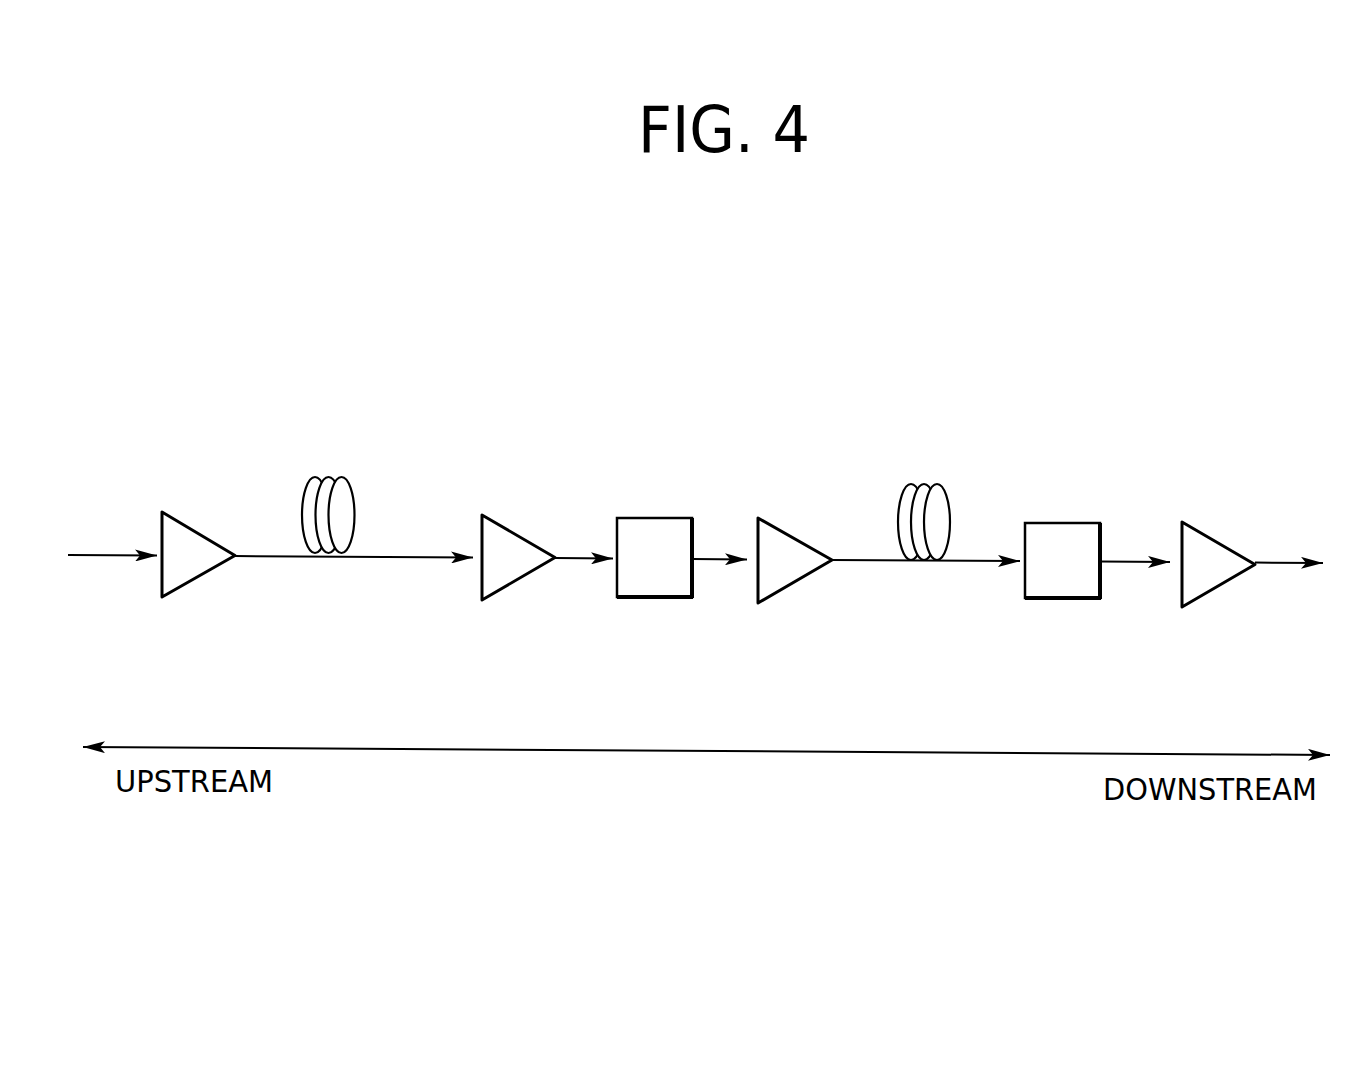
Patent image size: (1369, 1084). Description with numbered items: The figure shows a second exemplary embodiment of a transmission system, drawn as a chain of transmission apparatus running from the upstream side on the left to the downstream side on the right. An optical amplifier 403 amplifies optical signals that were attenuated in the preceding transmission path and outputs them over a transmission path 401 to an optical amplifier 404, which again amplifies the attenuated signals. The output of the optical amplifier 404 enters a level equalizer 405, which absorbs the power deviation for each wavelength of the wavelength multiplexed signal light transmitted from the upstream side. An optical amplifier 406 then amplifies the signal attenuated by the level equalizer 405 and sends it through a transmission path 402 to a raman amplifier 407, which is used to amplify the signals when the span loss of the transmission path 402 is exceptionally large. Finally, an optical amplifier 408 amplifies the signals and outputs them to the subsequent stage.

The transmission path 401 is at (355, 477).
The transmission path 402 is at (947, 483).
The optical amplifier 403 is at (188, 527).
The optical amplifier 404 is at (518, 533).
The level equalizer 405 is at (648, 598).
The optical amplifier 406 is at (793, 537).
The raman amplifier 407 is at (1060, 599).
The optical amplifier 408 is at (1202, 530).